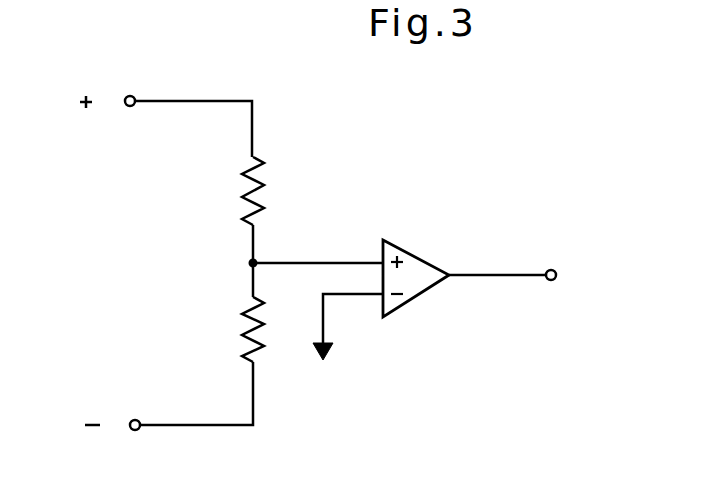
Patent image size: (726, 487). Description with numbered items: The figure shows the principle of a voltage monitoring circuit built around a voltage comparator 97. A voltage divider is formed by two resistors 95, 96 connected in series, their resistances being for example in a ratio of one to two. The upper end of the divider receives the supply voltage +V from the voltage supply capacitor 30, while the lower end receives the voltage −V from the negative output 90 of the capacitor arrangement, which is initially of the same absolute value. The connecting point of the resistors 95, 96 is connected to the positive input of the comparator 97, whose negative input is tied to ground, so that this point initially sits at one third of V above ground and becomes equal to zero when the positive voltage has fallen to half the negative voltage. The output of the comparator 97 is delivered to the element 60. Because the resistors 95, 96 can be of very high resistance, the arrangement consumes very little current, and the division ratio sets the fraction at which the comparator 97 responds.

The voltage supply capacitor 30 is at (166, 113).
The output destination circuit 60 is at (512, 257).
The negative output 90 is at (169, 414).
The resistor 95 is at (242, 190).
The resistor 96 is at (242, 326).
The comparator 97 is at (418, 296).